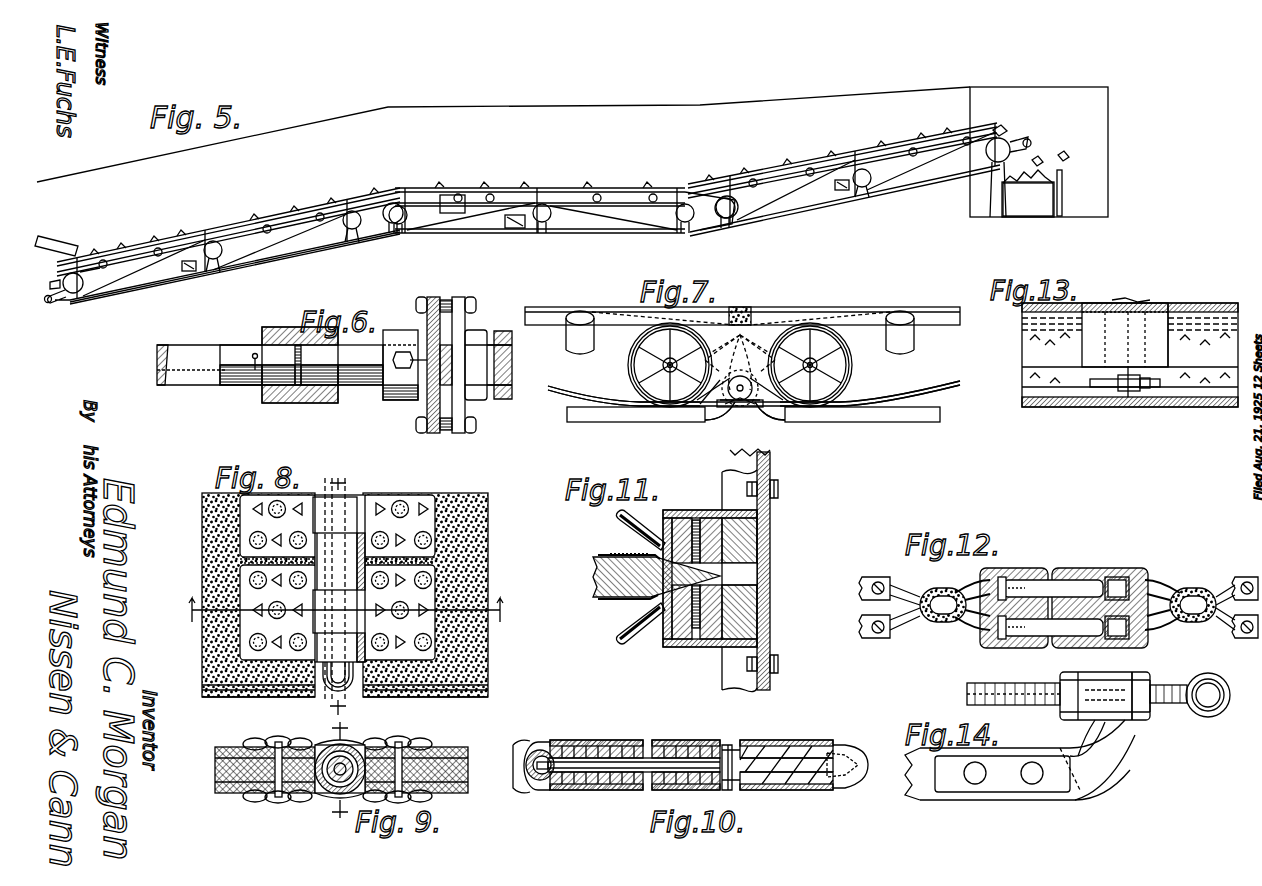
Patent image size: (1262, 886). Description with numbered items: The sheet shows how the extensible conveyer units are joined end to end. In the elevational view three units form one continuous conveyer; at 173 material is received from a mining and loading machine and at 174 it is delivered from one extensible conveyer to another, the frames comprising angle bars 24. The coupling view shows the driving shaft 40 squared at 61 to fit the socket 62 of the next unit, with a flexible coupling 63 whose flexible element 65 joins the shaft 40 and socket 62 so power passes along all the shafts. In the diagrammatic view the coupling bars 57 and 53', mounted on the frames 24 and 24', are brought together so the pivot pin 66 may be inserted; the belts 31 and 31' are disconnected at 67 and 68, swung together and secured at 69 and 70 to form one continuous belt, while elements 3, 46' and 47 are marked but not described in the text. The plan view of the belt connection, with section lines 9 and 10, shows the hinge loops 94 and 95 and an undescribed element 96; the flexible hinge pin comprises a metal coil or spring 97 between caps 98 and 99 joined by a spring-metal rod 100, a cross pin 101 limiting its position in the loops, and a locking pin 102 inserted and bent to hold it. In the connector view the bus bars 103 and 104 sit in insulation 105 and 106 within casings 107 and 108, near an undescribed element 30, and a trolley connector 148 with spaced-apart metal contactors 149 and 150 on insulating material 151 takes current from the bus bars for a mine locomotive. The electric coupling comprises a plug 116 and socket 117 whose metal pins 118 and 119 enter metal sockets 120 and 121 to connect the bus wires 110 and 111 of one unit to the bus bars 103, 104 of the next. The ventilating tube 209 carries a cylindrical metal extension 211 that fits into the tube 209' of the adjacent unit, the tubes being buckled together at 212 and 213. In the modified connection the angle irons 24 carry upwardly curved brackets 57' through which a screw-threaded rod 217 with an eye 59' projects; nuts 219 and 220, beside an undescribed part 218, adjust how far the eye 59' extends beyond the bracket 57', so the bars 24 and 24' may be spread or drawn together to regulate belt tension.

In FIG. 7, the frame member 3 is at (712, 407).
In FIG. 8, the section line 9— 9 is at (344, 610).
In FIG. 8, the section line 10— 10 is at (366, 710).
In FIG. 9, the section line 10— 10 is at (333, 773).
In FIG. 5, the angle bar 24 is at (235, 274).
In FIG. 7, the angle bar 24 is at (636, 425).
In FIG. 14, the angle bar 24 is at (1017, 771).
In FIG. 7, the angle bar of adjacent unit 24' is at (862, 427).
In FIG. 11, the plate 30 is at (770, 574).
In FIG. 7, the conveyer belt 31 is at (624, 385).
In FIG. 8, the conveyer belt 31 is at (443, 595).
In FIG. 9, the conveyer belt 31 is at (431, 770).
In FIG. 10, the conveyer belt 31 is at (527, 754).
In FIG. 7, the conveyer belt of adjacent unit 31' is at (870, 382).
In FIG. 8, the conveyer belt of adjacent unit 31' is at (258, 606).
In FIG. 9, the conveyer belt of adjacent unit 31' is at (243, 773).
In FIG. 6, the driving shaft 40 is at (176, 342).
In FIG. 7, the wheel 46' is at (829, 365).
In FIG. 7, the wheel 47 is at (628, 368).
In FIG. 7, the coupling bar 53' is at (770, 421).
In FIG. 7, the coupling bar 57 is at (720, 424).
In FIG. 14, the upwardly curved bracket 57' is at (1102, 761).
In FIG. 14, the eye 59' is at (1207, 708).
In FIG. 6, the squared shaft end 61 is at (232, 344).
In FIG. 6, the socket 62 is at (270, 327).
In FIG. 6, the flexible coupling 63 is at (440, 292).
In FIG. 6, the flexible element 65 is at (412, 330).
In FIG. 7, the pivot pin 66 is at (740, 376).
In FIG. 7, the belt disconnection point 67 is at (718, 350).
In FIG. 7, the belt disconnection point 68 is at (766, 350).
In FIG. 7, the belt connection point 69 is at (745, 308).
In FIG. 7, the belt connection point 70 is at (742, 410).
In FIG. 8, the hinge loop 94 is at (355, 578).
In FIG. 9, the hinge loop 94 is at (328, 788).
In FIG. 10, the hinge loop 94 is at (562, 746).
In FIG. 8, the hinge loop 95 is at (338, 516).
In FIG. 9, the hinge loop 95 is at (360, 748).
In FIG. 10, the hinge loop 95 is at (592, 746).
In FIG. 8, the hinge pin 96 is at (332, 688).
In FIG. 9, the hinge pin 96 is at (338, 758).
In FIG. 10, the metal coil or spring 97 is at (702, 750).
In FIG. 10, the cap 98 is at (530, 778).
In FIG. 10, the cap 99 is at (845, 790).
In FIG. 10, the rod 100 is at (592, 770).
In FIG. 10, the cross pin 101 is at (543, 770).
In FIG. 10, the locking pin 102 is at (842, 748).
In FIG. 11, the connector or bus bar 103 is at (696, 518).
In FIG. 12, the connector or bus bar 103 is at (1242, 580).
In FIG. 11, the connector or bus bar 104 is at (684, 640).
In FIG. 12, the connector or bus bar 104 is at (1242, 638).
In FIG. 11, the insulation 105 is at (715, 518).
In FIG. 11, the insulation 106 is at (712, 640).
In FIG. 11, the casing 107 is at (660, 518).
In FIG. 11, the casing 108 is at (662, 640).
In FIG. 12, the bus wire 110 is at (876, 582).
In FIG. 12, the bus wire 111 is at (876, 638).
In FIG. 12, the plug 116 is at (1020, 568).
In FIG. 12, the socket 117 is at (1080, 568).
In FIG. 12, the metal pin 118 is at (1036, 588).
In FIG. 12, the metal pin 119 is at (1030, 638).
In FIG. 12, the metal socket 120 is at (1115, 577).
In FIG. 12, the metal socket 121 is at (1100, 640).
In FIG. 11, the trolley connector 148 is at (596, 555).
In FIG. 11, the metal contactor 149 is at (620, 554).
In FIG. 11, the metal contactor 150 is at (620, 599).
In FIG. 11, the insulating material 151 is at (594, 580).
In FIG. 5, the material receiving point 173 is at (90, 244).
In FIG. 5, the material delivery point 174 is at (1048, 166).
In FIG. 13, the ventilating tube 209 is at (1130, 371).
In FIG. 13, the ventilating tube of adjacent unit 209' is at (1198, 323).
In FIG. 13, the cylindrical metal extension 211 is at (1150, 303).
In FIG. 13, the buckle connection 212 is at (1122, 298).
In FIG. 13, the buckle connection 213 is at (1135, 397).
In FIG. 14, the screw-threaded rod 217 is at (1168, 706).
In FIG. 14, the sleeve nut 218 is at (1093, 674).
In FIG. 14, the nut 219 is at (1148, 675).
In FIG. 14, the nut 220 is at (1095, 720).